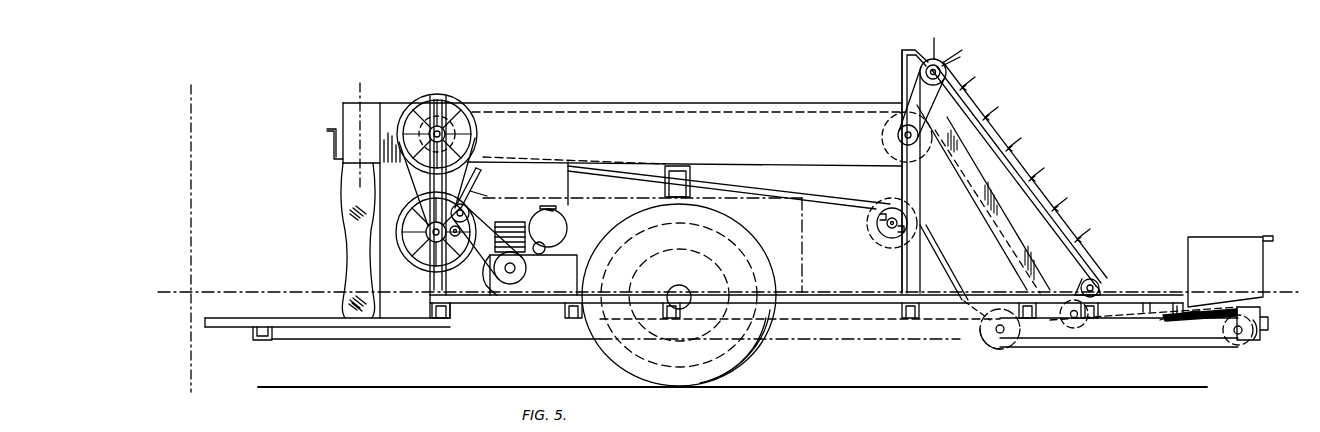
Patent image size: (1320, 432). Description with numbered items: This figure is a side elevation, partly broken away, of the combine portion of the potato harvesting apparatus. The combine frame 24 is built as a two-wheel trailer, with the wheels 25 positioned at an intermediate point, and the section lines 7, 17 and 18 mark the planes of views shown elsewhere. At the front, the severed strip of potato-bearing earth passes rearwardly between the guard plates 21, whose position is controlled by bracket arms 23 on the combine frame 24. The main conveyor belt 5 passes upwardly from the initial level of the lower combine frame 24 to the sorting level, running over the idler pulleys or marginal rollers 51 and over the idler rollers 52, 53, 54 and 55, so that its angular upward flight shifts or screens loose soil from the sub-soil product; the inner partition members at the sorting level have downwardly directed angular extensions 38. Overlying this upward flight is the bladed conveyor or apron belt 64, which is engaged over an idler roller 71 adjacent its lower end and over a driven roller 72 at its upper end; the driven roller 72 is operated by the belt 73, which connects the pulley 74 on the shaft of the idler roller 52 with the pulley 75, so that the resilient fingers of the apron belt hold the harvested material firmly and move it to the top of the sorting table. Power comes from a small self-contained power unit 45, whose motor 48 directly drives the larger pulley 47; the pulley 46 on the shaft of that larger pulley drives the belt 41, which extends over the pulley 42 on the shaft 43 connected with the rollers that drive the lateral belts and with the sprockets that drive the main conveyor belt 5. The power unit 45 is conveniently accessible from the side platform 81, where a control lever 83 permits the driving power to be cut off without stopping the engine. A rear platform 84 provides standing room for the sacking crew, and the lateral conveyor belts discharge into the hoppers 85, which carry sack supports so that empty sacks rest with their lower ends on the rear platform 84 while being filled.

The main conveyor belt 5 is at (1175, 322).
The section line 7- 7 is at (160, 292).
The section line 17- 17 is at (191, 85).
The section line 18- 18 is at (371, 85).
The guard plates 21 is at (1226, 252).
The bracket arms 23 is at (1262, 290).
The combine frame 24 is at (1197, 330).
The wheels 25 is at (737, 350).
The downwardly directed angular extensions 38 is at (1003, 232).
The belt 41 is at (416, 184).
The pulley 42 is at (468, 104).
The shaft 43 is at (441, 128).
The self-contained power unit 45 is at (553, 280).
The pulley 46 is at (424, 262).
The larger pulley 47 is at (426, 272).
The motor 48 is at (507, 274).
The idler pulleys or marginal rollers 51 is at (1080, 330).
The idler roller 52 is at (893, 118).
The idler roller 53 is at (870, 228).
The idler roller 54 is at (1008, 345).
The idler roller 55 is at (1252, 340).
The bladed conveyor or apron belt 64 is at (1032, 178).
The idler pulley or roller 71 is at (1098, 280).
The driven roller 72 is at (948, 70).
The belt 73 is at (911, 98).
The pulley 74 is at (897, 136).
The pulley 75 is at (938, 68).
The platform 81 is at (853, 298).
The control lever 83 is at (478, 172).
The rear platform 84 is at (293, 312).
The hoppers 85 is at (372, 120).